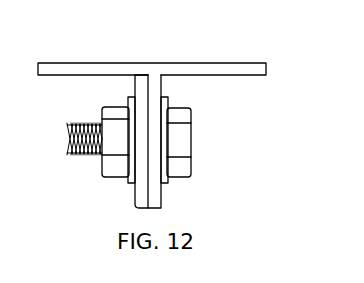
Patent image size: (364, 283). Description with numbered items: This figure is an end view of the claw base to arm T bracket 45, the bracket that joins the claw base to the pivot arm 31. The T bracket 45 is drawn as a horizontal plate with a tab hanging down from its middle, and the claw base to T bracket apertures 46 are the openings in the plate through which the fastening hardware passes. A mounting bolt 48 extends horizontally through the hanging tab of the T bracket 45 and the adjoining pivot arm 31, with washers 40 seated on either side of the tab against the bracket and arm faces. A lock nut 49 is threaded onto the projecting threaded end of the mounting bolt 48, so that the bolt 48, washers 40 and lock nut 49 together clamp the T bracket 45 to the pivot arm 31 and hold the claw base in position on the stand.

The claw base to T bracket aperture 46 is at (72, 63).
The claw base to arm T bracket 45 is at (154, 69).
The pivot arm 31 is at (143, 195).
The washer 40 is at (133, 181).
The mounting bolt 48 is at (191, 158).
The lock nut 49 is at (111, 178).